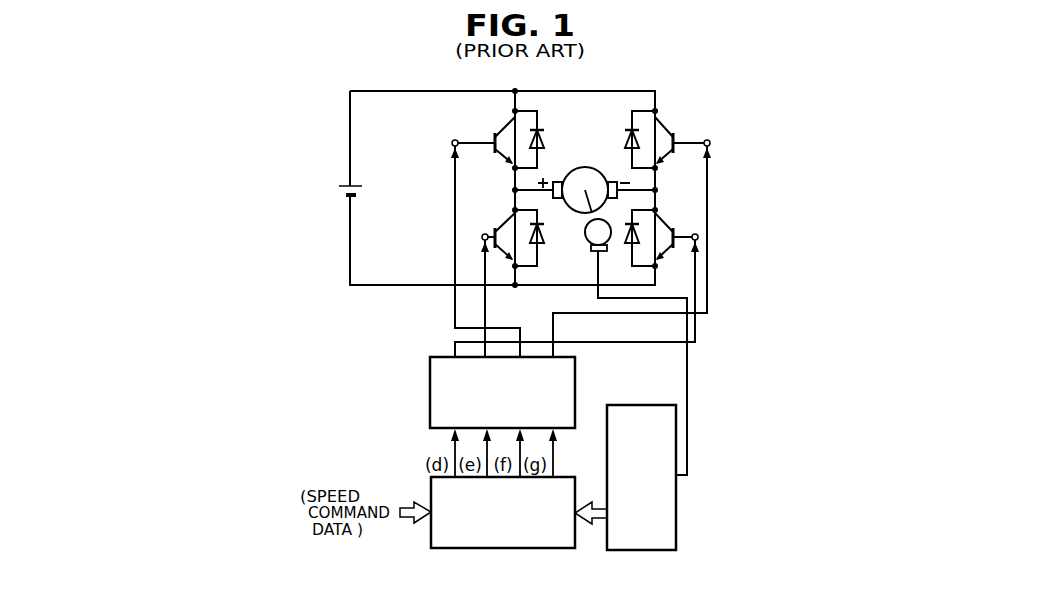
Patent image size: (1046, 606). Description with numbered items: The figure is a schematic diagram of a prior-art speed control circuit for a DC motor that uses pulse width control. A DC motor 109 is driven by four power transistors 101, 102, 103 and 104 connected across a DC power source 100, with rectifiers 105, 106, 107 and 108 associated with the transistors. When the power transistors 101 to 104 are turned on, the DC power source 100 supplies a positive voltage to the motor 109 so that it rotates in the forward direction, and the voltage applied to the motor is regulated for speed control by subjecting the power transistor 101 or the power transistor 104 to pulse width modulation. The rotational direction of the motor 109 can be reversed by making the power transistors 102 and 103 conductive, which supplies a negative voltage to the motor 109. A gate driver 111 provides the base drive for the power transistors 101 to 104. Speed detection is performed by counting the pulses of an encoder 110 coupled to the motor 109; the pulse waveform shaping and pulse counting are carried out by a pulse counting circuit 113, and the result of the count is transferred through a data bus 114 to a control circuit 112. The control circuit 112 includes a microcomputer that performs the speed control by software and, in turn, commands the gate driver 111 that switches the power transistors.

The DC power source 100 is at (341, 185).
The power transistor 101 is at (496, 134).
The power transistor 102 is at (494, 229).
The power transistor 103 is at (675, 132).
The power transistor 104 is at (675, 227).
The rectifier 105 is at (543, 128).
The rectifier 106 is at (539, 247).
The rectifier 107 is at (624, 138).
The rectifier 108 is at (662, 257).
The DC motor 109 is at (585, 167).
The encoder 110 is at (592, 252).
The gate driver 111 is at (430, 398).
The control circuit 112 is at (431, 488).
The pulse counting circuit 113 is at (677, 498).
The data bus 114 is at (590, 524).